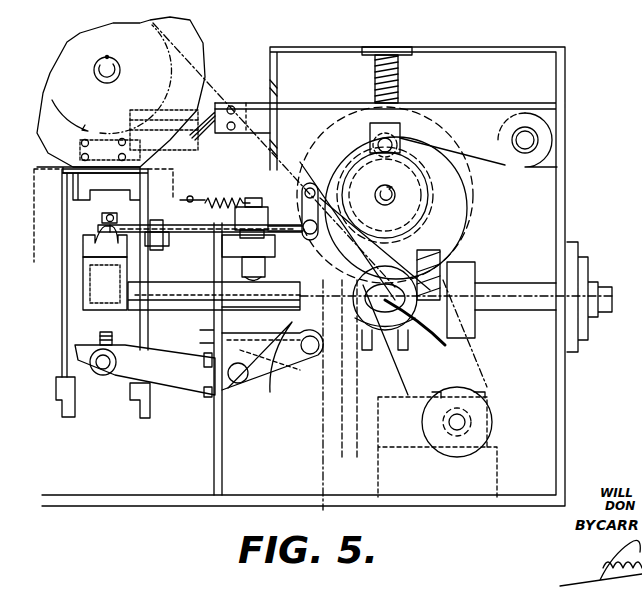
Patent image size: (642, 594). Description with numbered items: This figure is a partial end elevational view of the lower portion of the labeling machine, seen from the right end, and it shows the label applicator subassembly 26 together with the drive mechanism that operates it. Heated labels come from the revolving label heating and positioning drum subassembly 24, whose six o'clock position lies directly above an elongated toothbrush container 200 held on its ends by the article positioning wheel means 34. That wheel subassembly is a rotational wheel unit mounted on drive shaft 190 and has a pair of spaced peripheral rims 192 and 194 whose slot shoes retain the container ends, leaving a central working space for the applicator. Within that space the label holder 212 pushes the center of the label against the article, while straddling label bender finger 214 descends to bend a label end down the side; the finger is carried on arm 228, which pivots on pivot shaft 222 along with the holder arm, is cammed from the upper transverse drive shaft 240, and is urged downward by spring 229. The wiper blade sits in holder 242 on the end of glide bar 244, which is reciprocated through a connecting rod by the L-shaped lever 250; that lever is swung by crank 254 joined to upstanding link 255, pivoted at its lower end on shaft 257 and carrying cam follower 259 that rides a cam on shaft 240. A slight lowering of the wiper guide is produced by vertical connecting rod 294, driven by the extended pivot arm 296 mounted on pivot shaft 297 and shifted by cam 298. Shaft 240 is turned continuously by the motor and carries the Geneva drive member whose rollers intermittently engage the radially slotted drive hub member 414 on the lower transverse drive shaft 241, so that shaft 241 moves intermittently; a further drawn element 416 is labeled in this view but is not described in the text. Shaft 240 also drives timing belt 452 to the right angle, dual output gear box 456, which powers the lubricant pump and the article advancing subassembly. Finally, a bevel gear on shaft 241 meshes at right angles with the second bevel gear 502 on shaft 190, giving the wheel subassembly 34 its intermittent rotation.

The label heating and positioning drum subassembly 24 is at (194, 26).
The label applicator subassembly 26 is at (194, 143).
The article positioning wheel means 34 is at (56, 337).
The drive shaft 190 is at (145, 280).
The peripheral rim 192 is at (68, 365).
The peripheral rim 194 is at (152, 335).
The toothbrush container 200 is at (48, 190).
The label holder 212 is at (105, 145).
The label bender finger 214 is at (148, 143).
The pivot shaft 222 is at (534, 140).
The arm 228 is at (315, 106).
The spring 229 is at (399, 78).
The upper transverse drive shaft 240 is at (399, 196).
The lower transverse drive shaft 241 is at (460, 345).
The holder 242 is at (97, 200).
The glide bar 244 is at (102, 245).
The L-shaped lever 250 is at (173, 237).
The crank 254 is at (278, 210).
The upstanding link 255 is at (306, 268).
The shaft 257 is at (313, 362).
The cam follower 259 is at (312, 188).
The vertical connecting rod 294 is at (104, 333).
The extended pivot arm 296 is at (177, 392).
The pivot shaft 297 is at (243, 402).
The cam 298 is at (410, 207).
The radially slotted drive hub member 414 is at (388, 340).
The shaft 416 is at (352, 460).
The timing belt 452 is at (480, 385).
The right angle drive gear box 456 is at (390, 433).
The second bevel gear 502 is at (433, 287).